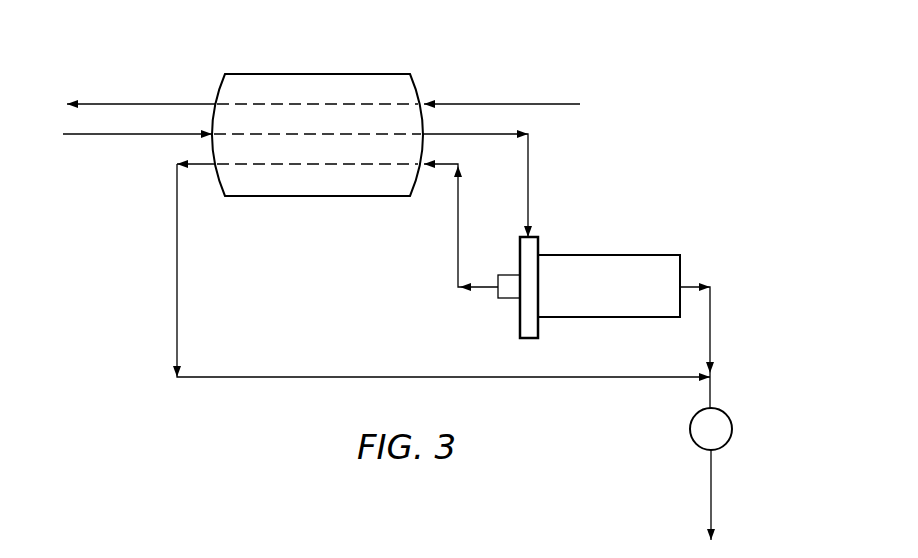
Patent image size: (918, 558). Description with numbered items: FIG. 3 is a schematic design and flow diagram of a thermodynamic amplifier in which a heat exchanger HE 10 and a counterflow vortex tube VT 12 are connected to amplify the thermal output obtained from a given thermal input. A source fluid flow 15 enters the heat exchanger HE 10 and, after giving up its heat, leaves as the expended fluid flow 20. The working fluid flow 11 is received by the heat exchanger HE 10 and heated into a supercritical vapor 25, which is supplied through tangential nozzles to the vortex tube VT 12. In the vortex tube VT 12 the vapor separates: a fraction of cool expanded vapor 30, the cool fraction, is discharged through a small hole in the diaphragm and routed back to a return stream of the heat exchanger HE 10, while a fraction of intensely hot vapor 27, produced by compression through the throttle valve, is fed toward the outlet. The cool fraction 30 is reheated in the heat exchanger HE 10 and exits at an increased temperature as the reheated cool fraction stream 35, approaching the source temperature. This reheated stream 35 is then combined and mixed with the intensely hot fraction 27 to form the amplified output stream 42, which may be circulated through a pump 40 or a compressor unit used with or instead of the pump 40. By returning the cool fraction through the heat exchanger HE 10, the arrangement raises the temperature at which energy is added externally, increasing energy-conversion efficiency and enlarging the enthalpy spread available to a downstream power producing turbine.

The heat exchanger 10 is at (317, 74).
The expended fluid flow 20 is at (155, 104).
The fluid flow 11 is at (155, 135).
The source fluid flow 15 is at (497, 104).
The supercritical vapor 25 is at (530, 193).
The cool expanded vapor 30 is at (458, 238).
The vortex tube 12 is at (613, 255).
The intensely hot vapor 27 is at (712, 345).
The reheated cool fraction stream 35 is at (176, 312).
The pump 40 is at (732, 430).
The amplified output stream 42 is at (712, 465).